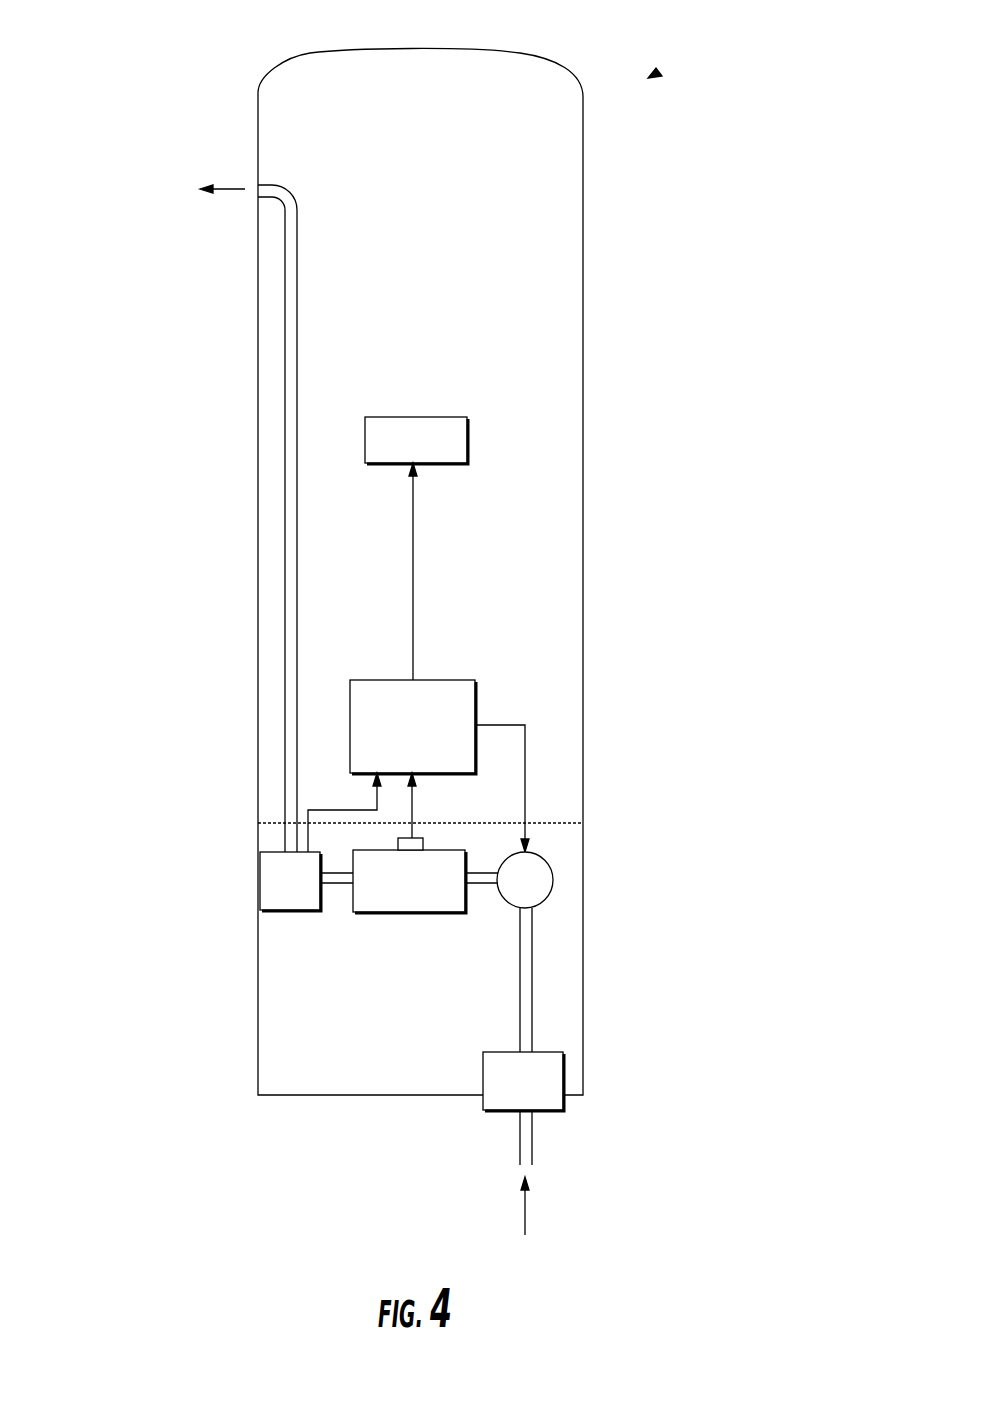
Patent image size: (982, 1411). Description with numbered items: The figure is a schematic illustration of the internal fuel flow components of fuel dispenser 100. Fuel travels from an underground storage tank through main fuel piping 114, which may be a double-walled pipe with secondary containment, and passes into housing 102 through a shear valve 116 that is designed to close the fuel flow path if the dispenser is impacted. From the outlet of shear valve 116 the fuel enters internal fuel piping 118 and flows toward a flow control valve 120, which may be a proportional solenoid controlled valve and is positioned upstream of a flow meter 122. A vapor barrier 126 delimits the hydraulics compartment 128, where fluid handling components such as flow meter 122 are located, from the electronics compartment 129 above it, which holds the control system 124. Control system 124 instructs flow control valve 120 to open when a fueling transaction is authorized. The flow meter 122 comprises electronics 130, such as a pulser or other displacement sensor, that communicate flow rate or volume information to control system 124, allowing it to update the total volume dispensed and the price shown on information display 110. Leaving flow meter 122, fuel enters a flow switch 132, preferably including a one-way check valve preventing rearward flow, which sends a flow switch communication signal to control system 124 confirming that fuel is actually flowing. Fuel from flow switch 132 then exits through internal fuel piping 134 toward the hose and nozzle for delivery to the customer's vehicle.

The fuel dispenser 100 is at (399, 633).
The housing 102 is at (422, 558).
The information display 110 is at (455, 415).
The main fuel piping 114 is at (532, 1138).
The shear valve 116 is at (563, 1070).
The internal fuel piping 118 is at (532, 1010).
The flow control valve 120 is at (553, 883).
The flow meter 122 is at (413, 912).
The control system 124 is at (400, 680).
The vapor barrier 126 is at (552, 823).
The hydraulics compartment 128 is at (258, 989).
The electronics compartment 129 is at (578, 256).
The electronics 130 is at (397, 840).
The flow switch 132 is at (260, 880).
The internal fuel piping 134 is at (285, 468).